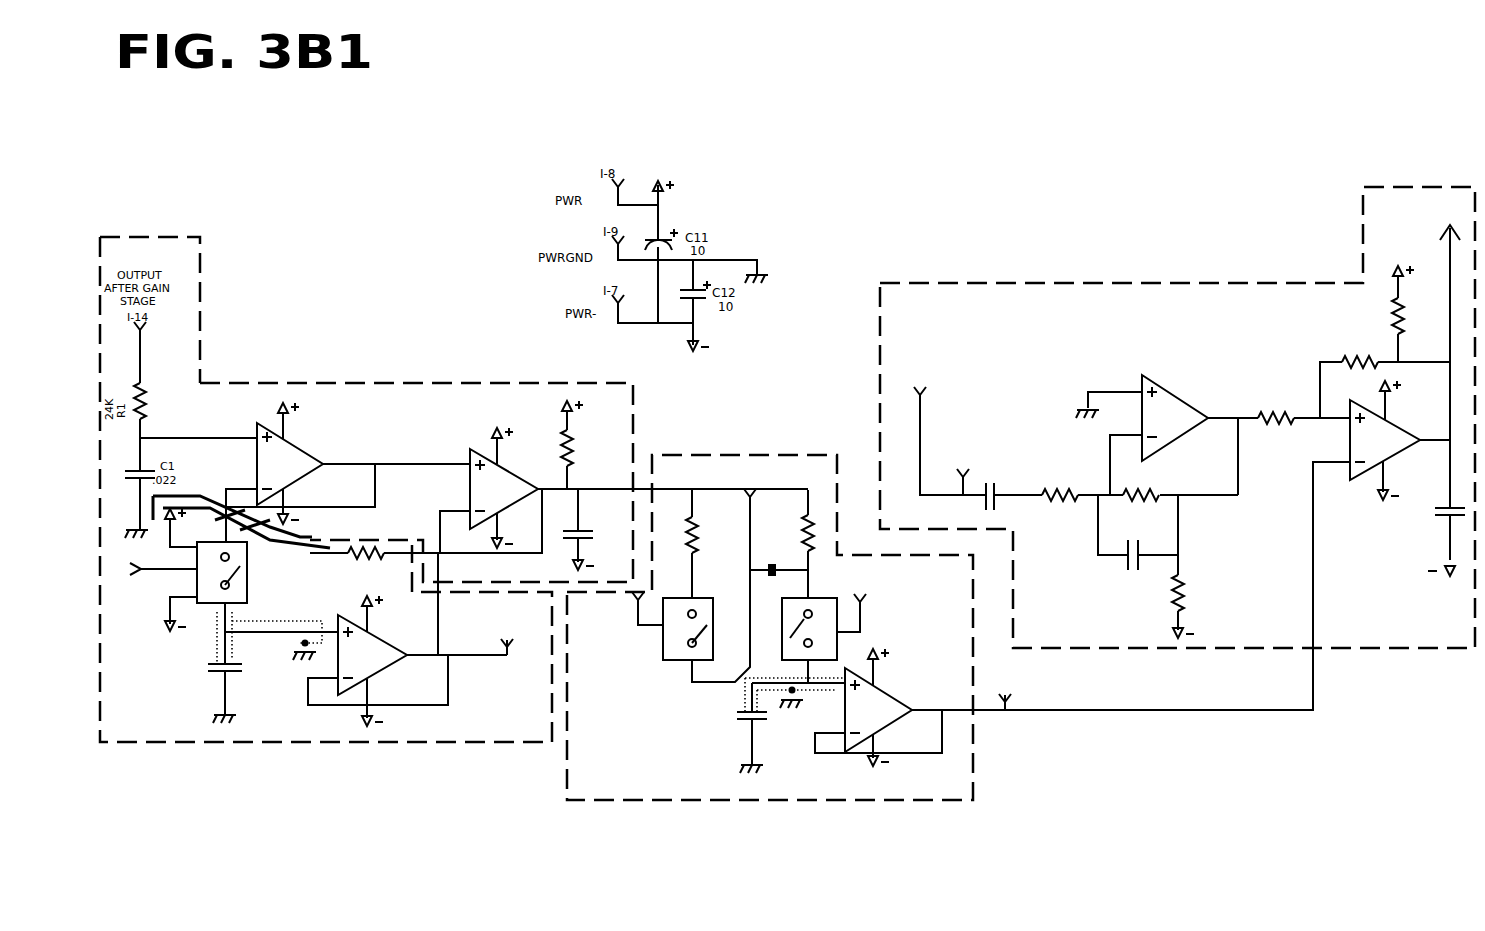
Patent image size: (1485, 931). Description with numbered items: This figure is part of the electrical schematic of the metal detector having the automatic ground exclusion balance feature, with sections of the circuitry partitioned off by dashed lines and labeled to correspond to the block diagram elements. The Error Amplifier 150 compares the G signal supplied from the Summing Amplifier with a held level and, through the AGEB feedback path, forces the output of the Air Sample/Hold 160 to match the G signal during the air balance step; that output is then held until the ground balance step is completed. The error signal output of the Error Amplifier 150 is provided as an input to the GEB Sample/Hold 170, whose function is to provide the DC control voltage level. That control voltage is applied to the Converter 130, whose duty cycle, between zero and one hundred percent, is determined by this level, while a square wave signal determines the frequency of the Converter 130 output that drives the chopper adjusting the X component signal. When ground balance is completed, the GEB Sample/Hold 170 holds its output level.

The Converter 130 is at (1005, 283).
The Error Amplifier 150 is at (317, 383).
The Air Sample/Hold 160 is at (332, 742).
The GEB Sample/Hold 170 is at (813, 800).